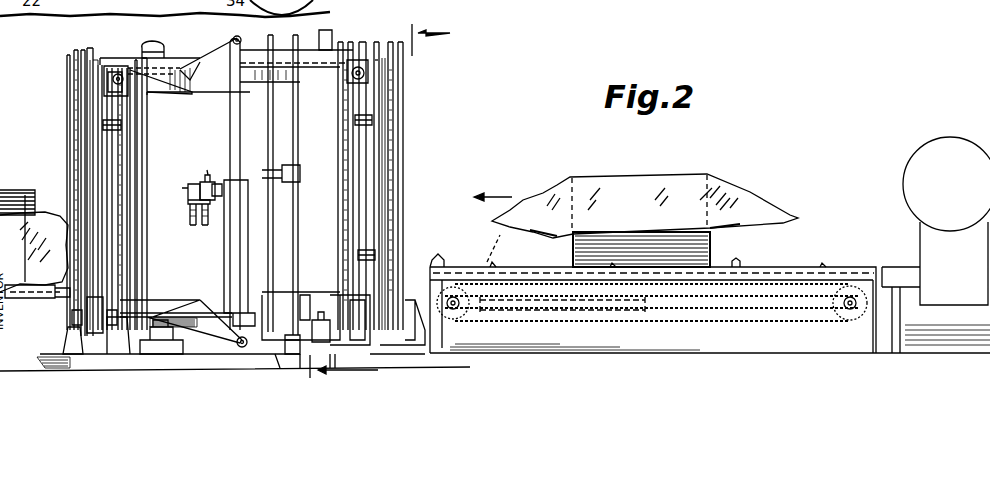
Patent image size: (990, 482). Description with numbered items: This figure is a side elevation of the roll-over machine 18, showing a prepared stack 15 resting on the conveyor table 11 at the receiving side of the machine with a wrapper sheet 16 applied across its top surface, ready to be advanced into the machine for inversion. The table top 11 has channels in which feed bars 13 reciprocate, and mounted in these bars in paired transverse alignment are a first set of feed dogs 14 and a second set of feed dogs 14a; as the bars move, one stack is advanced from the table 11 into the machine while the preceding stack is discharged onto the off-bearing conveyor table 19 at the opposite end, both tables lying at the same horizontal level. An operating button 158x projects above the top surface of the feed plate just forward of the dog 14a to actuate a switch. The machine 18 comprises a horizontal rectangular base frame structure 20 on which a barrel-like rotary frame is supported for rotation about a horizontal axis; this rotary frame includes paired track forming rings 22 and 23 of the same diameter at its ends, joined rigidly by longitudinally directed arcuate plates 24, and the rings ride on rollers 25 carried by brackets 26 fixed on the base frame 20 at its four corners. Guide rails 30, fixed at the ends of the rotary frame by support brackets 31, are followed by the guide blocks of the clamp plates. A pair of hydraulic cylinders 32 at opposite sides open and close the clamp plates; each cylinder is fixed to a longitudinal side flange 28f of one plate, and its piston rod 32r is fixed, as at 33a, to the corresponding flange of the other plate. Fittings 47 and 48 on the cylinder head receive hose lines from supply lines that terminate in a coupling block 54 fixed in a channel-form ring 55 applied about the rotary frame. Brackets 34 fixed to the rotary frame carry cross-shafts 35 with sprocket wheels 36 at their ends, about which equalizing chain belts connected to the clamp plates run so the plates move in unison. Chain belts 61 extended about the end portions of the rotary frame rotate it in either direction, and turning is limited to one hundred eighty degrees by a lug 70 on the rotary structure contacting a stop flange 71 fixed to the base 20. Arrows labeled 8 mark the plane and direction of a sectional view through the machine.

The direction of travel arrow 8 is at (440, 40).
The conveyor table 11 is at (816, 266).
The feed bars 13 is at (484, 268).
The feed dogs 14 is at (742, 266).
The feed dogs 14a is at (448, 262).
The stack 15 is at (645, 252).
The wrapper sheet 16 is at (738, 196).
The roll-over machine 18 is at (424, 144).
The conveyor table 19 is at (26, 294).
The base frame structure 20 is at (208, 360).
The track forming ring 22 is at (82, 97).
The track forming ring 23 is at (385, 206).
The arcuate plates 24 is at (186, 58).
The rollers 25 is at (94, 318).
The brackets 26 is at (66, 344).
The longitudinal side flange 28f is at (215, 300).
The guide rails 30 is at (124, 172).
The support brackets 31 is at (108, 116).
The hydraulic cylinder 32 is at (240, 238).
The piston rod 32r is at (232, 122).
The piston rod fixing point 33a is at (198, 65).
The brackets 34 is at (112, 70).
The cross-shafts 35 is at (365, 68).
The sprocket wheels 36 is at (378, 73).
The fitting 47 is at (196, 192).
The fitting 48 is at (207, 182).
The coupling block 54 is at (292, 178).
The ring 55 is at (300, 140).
The chain belts 61 is at (78, 146).
The lug 70 is at (332, 38).
The stop flange 71 is at (320, 322).
The operating button 158x is at (500, 220).